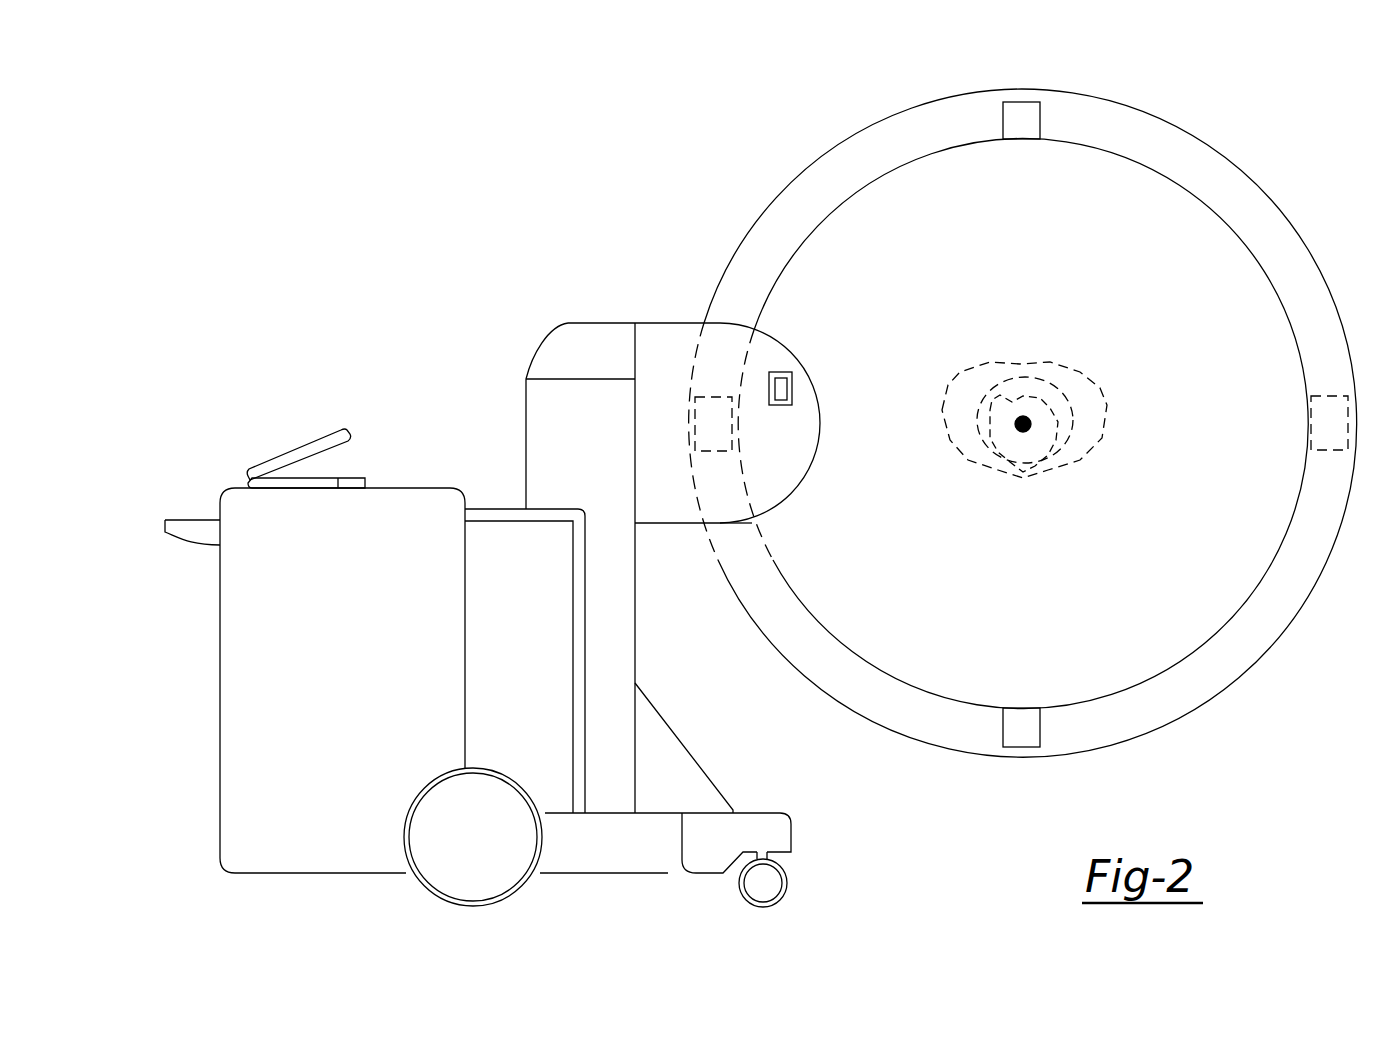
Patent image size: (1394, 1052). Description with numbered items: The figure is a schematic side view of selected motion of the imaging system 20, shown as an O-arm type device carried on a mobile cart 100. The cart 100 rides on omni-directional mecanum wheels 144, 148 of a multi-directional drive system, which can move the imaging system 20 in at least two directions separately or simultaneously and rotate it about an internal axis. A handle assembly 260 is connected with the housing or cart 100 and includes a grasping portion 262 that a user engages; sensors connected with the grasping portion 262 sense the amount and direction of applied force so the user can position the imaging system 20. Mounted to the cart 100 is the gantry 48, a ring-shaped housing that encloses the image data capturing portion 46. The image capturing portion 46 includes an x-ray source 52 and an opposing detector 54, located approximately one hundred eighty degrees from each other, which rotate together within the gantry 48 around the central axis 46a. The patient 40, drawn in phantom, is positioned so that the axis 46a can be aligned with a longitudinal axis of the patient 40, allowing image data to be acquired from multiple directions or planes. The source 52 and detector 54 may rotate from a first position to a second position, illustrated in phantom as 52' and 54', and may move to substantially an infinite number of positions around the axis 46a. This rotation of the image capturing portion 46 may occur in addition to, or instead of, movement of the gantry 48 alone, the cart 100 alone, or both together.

The imaging system 20 is at (1023, 396).
The gantry 48 is at (836, 141).
The image data capturing portion 46 is at (976, 115).
The x-ray source 52 is at (1061, 102).
The detector 54 is at (1059, 697).
The source in second position 52' is at (790, 460).
The detector in second position 54' is at (1350, 350).
The patient 40 is at (996, 358).
The central axis 46a is at (1023, 420).
The handle assembly 260 is at (767, 318).
The grasping portion 262 is at (788, 387).
The mobile cart 100 is at (211, 615).
The mecanum wheel 144 is at (460, 876).
The mecanum wheel 148 is at (770, 884).